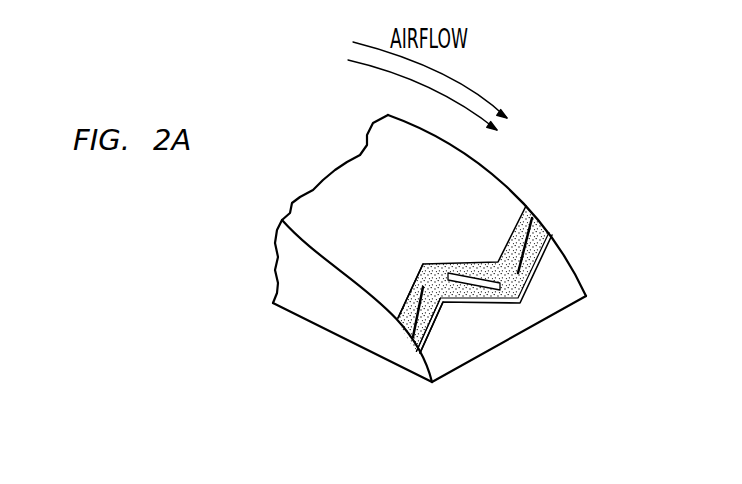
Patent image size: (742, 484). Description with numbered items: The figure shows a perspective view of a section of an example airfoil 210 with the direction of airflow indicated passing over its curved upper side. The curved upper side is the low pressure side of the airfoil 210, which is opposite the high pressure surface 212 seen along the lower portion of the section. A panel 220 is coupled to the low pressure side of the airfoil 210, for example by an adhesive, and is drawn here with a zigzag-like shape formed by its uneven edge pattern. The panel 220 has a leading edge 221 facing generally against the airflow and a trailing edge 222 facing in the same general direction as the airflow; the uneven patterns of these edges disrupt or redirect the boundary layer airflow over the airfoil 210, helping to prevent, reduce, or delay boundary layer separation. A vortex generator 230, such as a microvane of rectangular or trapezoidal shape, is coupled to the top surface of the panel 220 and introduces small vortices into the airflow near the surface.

The airfoil 210 is at (592, 160).
The high pressure surface 212 is at (315, 332).
The panel 220 is at (478, 262).
The leading edge 221 is at (410, 277).
The trailing edge 222 is at (438, 333).
The vortex generator 230 is at (511, 274).